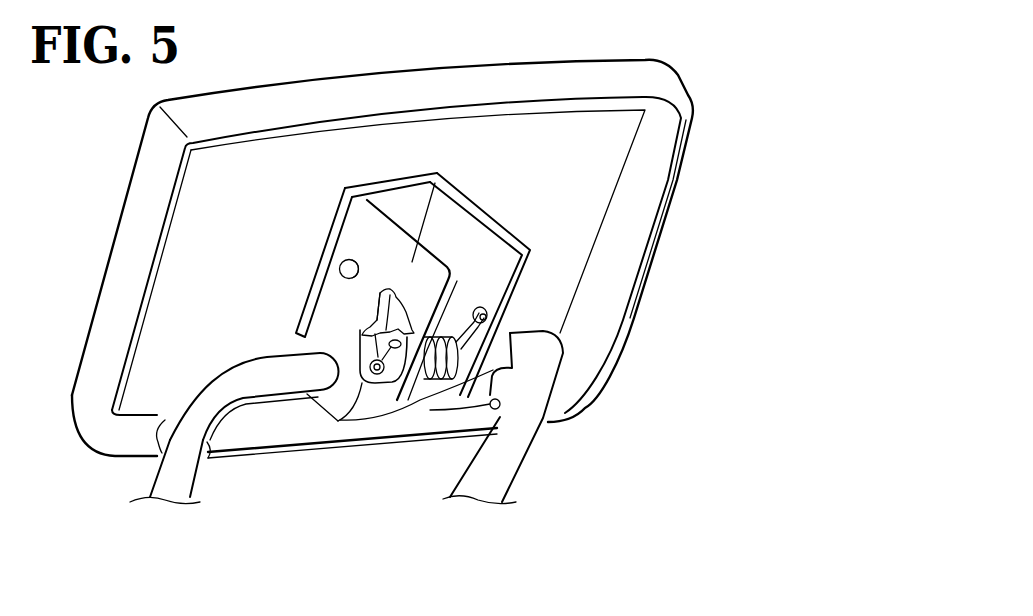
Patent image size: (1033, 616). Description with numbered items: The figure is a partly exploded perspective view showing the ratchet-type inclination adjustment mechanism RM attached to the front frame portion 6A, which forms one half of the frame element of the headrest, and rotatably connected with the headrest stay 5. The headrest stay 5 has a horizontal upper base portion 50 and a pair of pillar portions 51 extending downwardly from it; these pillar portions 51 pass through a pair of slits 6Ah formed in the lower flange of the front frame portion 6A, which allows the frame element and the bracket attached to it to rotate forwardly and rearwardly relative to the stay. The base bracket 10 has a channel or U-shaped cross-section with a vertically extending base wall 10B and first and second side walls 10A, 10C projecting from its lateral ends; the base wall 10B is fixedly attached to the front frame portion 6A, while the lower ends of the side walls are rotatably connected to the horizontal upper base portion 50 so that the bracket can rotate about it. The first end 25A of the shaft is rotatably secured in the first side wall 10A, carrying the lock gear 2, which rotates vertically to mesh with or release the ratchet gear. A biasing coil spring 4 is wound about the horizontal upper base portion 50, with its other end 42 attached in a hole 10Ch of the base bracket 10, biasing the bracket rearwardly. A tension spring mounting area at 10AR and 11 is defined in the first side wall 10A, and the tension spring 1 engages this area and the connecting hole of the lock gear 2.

The tension spring 1 is at (375, 381).
The lock gear 2 is at (399, 364).
The biasing coil spring 4 is at (486, 394).
The headrest stay 5 is at (398, 435).
The front frame portion 6A is at (677, 83).
The slit 6Ah is at (160, 482).
The base bracket 10 is at (422, 335).
The first side wall 10A is at (348, 282).
The tension spring mounting area 10AR is at (353, 383).
The base wall 10B is at (400, 173).
The second side wall 10C is at (517, 285).
The hole 10Ch is at (484, 310).
The tension spring mounting area 11 is at (389, 296).
The first end of shaft 25A is at (340, 268).
The other end of biasing coil spring 42 is at (488, 315).
The horizontal upper base portion 50 is at (240, 378).
The pillar portion 51 is at (187, 470).
The ratchet-type inclination adjustment mechanism RM is at (285, 298).